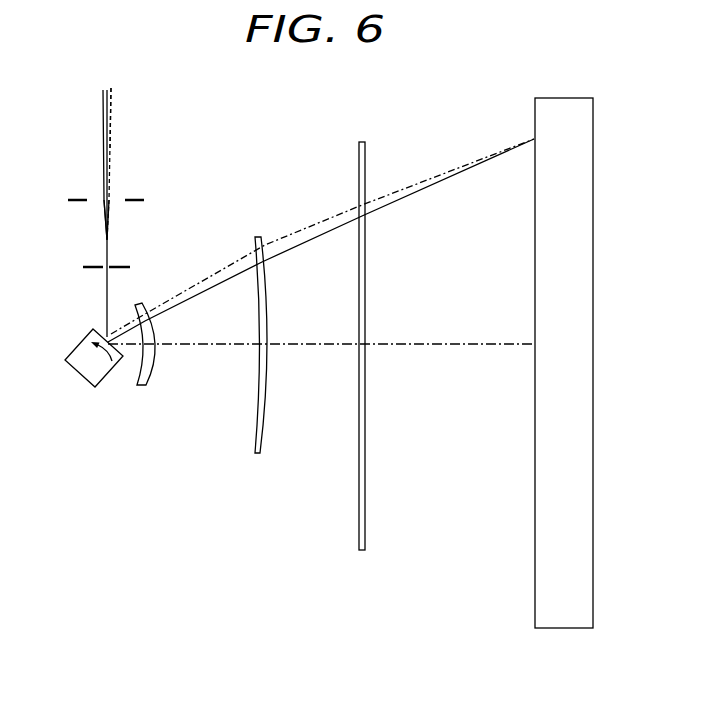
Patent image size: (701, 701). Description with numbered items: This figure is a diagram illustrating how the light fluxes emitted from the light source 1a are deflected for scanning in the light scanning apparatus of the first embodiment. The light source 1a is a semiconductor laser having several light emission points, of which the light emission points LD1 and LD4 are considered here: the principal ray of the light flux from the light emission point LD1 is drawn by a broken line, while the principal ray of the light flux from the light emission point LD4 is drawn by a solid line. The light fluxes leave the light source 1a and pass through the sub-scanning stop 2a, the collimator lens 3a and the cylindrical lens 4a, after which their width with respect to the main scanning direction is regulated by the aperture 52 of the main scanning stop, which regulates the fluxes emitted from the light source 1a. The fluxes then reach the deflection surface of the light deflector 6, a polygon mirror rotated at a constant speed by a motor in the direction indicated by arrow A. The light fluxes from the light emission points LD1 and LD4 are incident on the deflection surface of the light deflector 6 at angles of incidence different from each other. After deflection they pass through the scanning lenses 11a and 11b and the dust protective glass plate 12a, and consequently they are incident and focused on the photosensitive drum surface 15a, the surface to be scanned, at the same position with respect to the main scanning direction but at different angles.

The light source 1a is at (103, 88).
The light emission point LD1 is at (115, 91).
The light emission point LD4 is at (102, 97).
The sub-scanning stop 2a is at (109, 202).
The collimator lens 3a is at (113, 121).
The cylindrical lens 4a is at (109, 190).
The aperture 52 is at (109, 260).
The light deflector 6 is at (100, 392).
The scanning lens 11a is at (142, 387).
The scanning lens 11b is at (257, 455).
The dust protective glass plate 12a is at (366, 508).
The photosensitive drum surface 15a is at (561, 106).